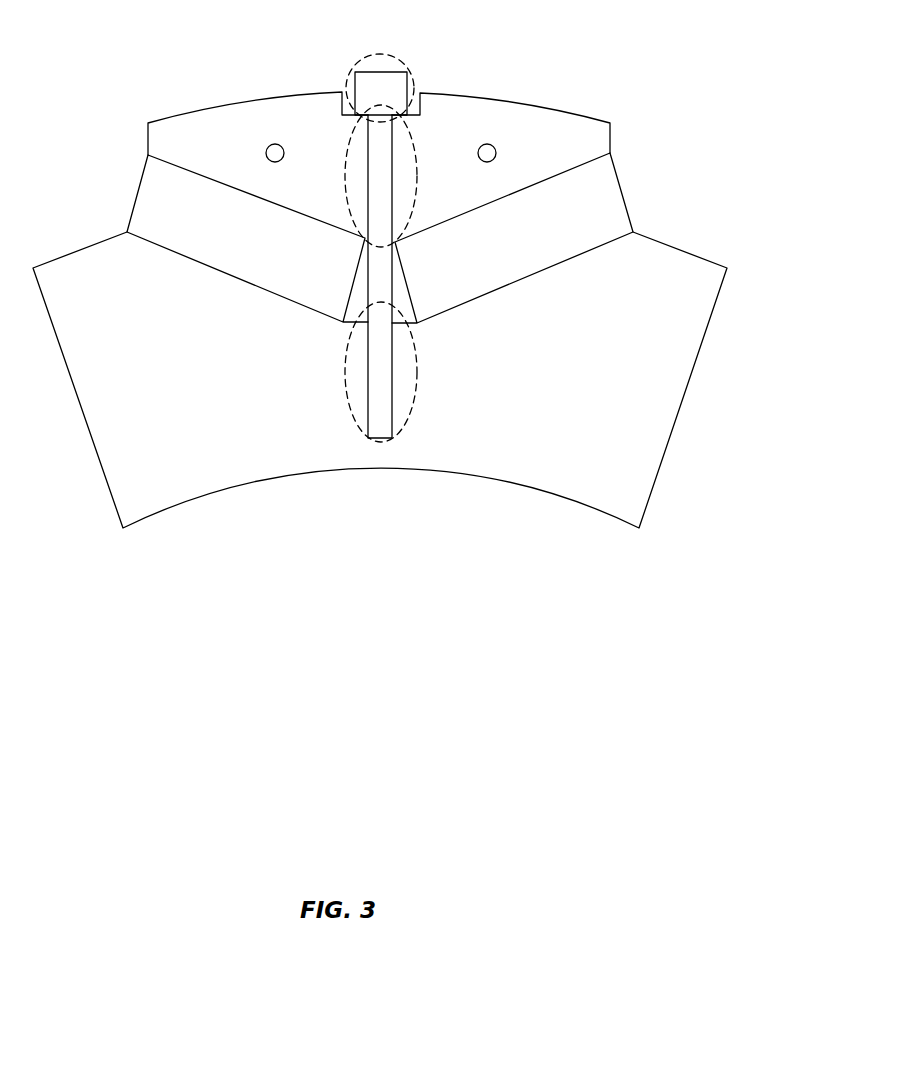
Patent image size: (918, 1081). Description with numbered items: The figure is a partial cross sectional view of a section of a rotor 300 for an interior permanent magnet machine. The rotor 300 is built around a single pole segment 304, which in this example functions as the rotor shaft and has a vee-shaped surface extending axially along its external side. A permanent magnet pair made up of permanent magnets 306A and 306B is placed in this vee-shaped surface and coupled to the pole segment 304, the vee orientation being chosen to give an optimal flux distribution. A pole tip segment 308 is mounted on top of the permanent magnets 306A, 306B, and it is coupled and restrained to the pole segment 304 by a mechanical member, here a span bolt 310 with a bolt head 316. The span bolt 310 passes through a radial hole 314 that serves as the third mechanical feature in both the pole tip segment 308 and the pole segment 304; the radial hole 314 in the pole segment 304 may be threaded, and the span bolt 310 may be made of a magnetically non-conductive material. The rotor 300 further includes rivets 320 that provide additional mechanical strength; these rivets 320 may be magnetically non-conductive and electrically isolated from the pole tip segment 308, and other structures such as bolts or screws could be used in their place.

The rotor 300 is at (643, 775).
The pole segment 304 is at (670, 407).
The permanent magnet 306A is at (178, 173).
The permanent magnet 306B is at (583, 177).
The pole tip segment 308 is at (518, 112).
The span bolt 310 is at (377, 288).
The radial hole 314 is at (405, 128).
The bolt head 316 is at (382, 60).
The rivet 320 is at (277, 145).